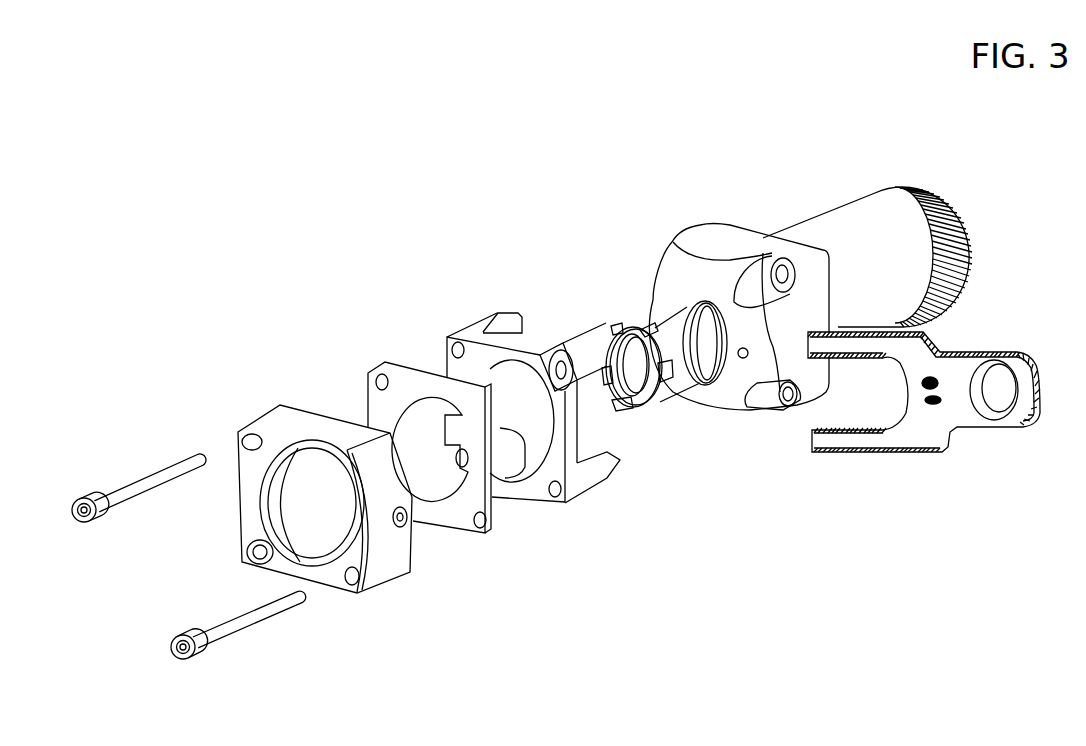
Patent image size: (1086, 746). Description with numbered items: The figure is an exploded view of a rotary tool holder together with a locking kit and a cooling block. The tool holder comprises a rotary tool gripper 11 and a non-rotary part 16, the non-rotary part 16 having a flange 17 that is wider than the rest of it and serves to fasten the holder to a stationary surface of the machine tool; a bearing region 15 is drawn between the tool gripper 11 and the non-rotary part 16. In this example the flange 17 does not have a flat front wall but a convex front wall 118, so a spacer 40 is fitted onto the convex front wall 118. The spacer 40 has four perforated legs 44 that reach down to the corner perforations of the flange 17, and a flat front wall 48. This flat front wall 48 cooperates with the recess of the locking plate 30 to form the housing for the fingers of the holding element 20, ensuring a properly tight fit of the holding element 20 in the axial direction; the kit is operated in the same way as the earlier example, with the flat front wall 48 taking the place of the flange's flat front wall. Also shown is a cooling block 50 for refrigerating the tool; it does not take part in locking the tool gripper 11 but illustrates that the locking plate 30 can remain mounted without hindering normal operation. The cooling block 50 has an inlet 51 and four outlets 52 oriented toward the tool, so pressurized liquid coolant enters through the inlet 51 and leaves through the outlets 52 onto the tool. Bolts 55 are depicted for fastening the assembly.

The rotary tool gripper 11 is at (677, 348).
The bearing 15 is at (745, 393).
The non-rotary part 16 is at (847, 225).
The flange 17 is at (738, 247).
The holding element 20 is at (932, 418).
The locking plate 30 is at (413, 363).
The spacer 40 is at (526, 419).
The perforated legs 44 is at (608, 473).
The flat front wall 48 is at (540, 483).
The cooling block 50 is at (296, 493).
The inlet 51 is at (417, 518).
The outlets 52 is at (262, 542).
The screws 55 is at (235, 475).
The convex front wall 118 is at (673, 248).